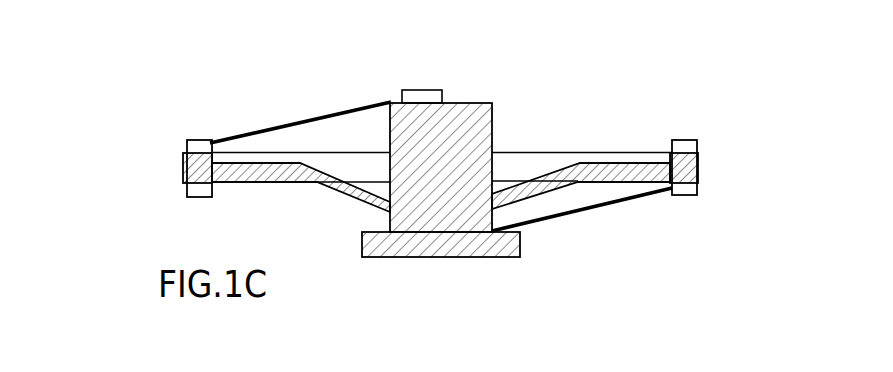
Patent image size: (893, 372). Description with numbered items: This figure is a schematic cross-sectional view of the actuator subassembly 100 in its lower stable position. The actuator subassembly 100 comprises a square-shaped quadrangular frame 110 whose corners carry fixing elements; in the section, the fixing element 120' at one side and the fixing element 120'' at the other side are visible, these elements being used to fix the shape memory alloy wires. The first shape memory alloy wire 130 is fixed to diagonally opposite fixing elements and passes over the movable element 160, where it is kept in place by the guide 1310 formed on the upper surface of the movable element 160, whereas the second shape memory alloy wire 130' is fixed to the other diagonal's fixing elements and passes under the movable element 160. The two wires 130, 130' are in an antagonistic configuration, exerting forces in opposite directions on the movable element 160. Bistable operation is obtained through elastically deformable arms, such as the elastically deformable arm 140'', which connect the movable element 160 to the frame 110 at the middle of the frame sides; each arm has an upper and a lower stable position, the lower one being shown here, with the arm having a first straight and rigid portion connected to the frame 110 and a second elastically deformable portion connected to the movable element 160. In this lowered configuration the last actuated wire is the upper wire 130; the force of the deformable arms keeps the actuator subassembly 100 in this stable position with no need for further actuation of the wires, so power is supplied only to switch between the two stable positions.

The actuator subassembly 100 is at (204, 126).
The quadrangular frame 110 is at (512, 160).
The fixing element 120' is at (152, 157).
The fixing element 120'' is at (682, 129).
The first shape memory alloy wire 130 is at (300, 91).
The second shape memory alloy wire 130' is at (582, 225).
The elastically deformable arm 140'' is at (581, 150).
The movable element 160 is at (492, 101).
The guide 1310 is at (413, 89).